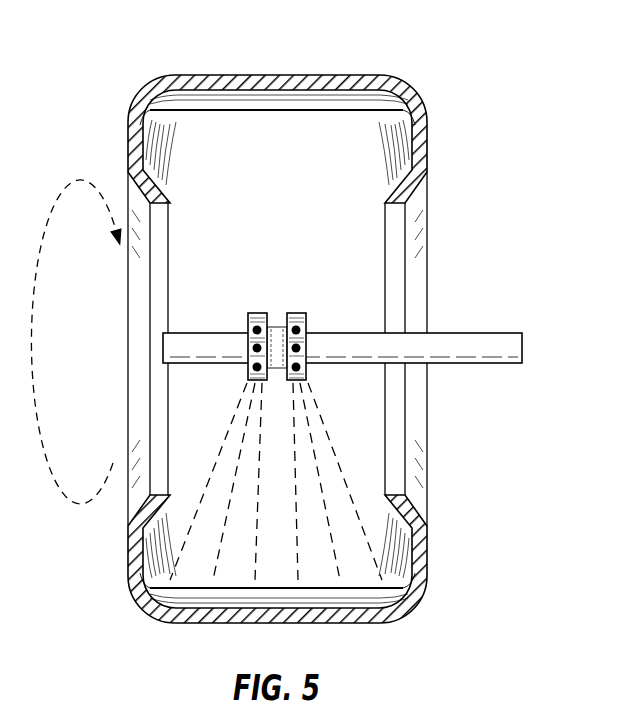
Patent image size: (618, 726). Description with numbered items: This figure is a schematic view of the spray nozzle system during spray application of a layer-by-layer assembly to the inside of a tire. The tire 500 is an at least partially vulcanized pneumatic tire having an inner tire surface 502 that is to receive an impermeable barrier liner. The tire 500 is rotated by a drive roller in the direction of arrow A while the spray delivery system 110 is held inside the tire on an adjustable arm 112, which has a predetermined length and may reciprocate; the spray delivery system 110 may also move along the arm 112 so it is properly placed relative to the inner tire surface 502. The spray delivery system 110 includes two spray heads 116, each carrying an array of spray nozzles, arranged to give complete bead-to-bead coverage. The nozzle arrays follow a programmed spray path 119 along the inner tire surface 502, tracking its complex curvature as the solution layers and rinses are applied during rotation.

The tire 500 is at (320, 75).
The inner tire surface 502 is at (200, 132).
The spray delivery system 110 is at (326, 319).
The adjustable arm 112 is at (465, 363).
The spray heads 116 is at (254, 312).
The programmed spray path 119 is at (326, 505).
The arrow A is at (33, 343).